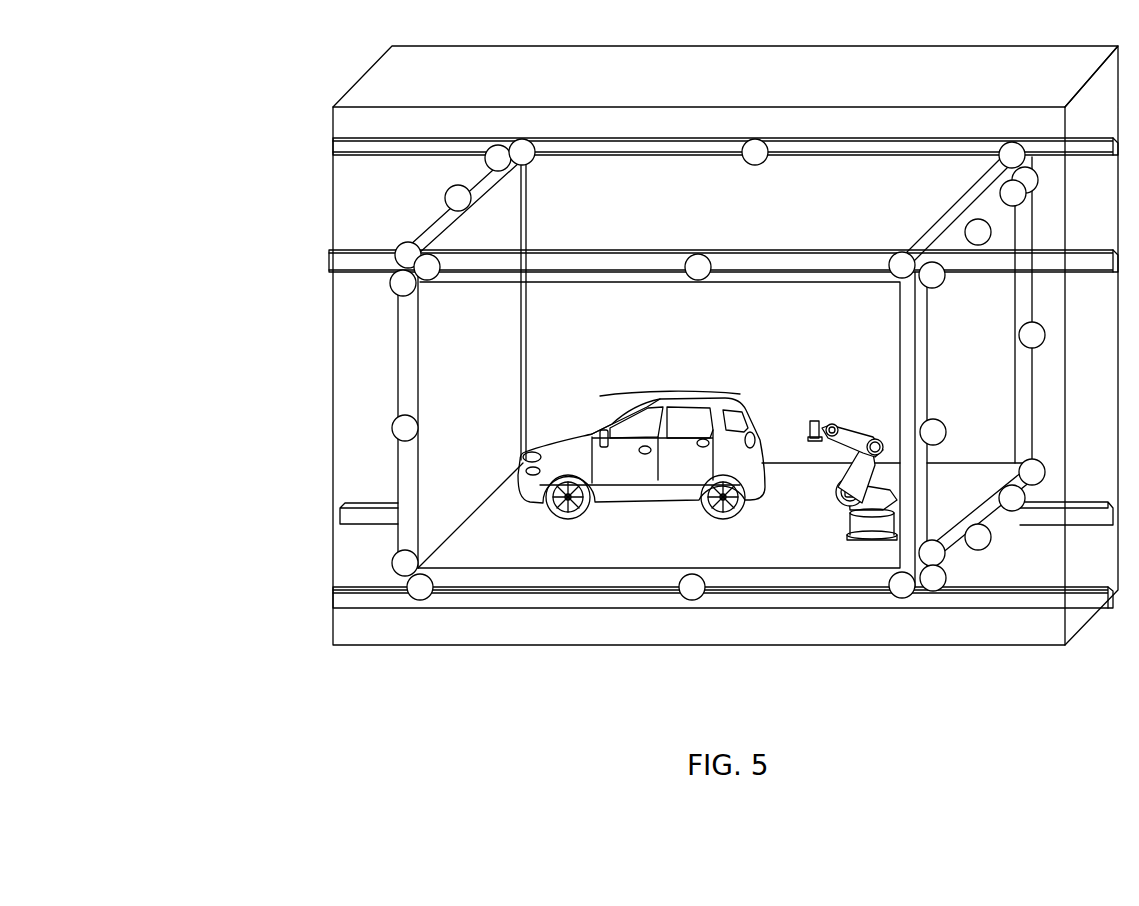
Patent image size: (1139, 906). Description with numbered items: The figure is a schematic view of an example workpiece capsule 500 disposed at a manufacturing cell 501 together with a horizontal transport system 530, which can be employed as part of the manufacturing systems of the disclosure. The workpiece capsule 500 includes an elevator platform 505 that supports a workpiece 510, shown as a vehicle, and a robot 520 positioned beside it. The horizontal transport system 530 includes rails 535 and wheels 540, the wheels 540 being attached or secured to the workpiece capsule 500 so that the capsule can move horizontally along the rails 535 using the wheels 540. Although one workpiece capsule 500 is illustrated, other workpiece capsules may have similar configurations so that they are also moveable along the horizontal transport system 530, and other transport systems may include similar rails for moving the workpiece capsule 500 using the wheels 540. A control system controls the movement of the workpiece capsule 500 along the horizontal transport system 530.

The workpiece capsule 500 is at (445, 380).
The manufacturing cell 501 is at (362, 124).
The elevator platform 505 is at (628, 541).
The workpiece 510 is at (523, 478).
The robot 520 is at (866, 540).
The horizontal transport system 530 is at (672, 345).
The rails 535 is at (367, 262).
The wheels 540 is at (690, 592).